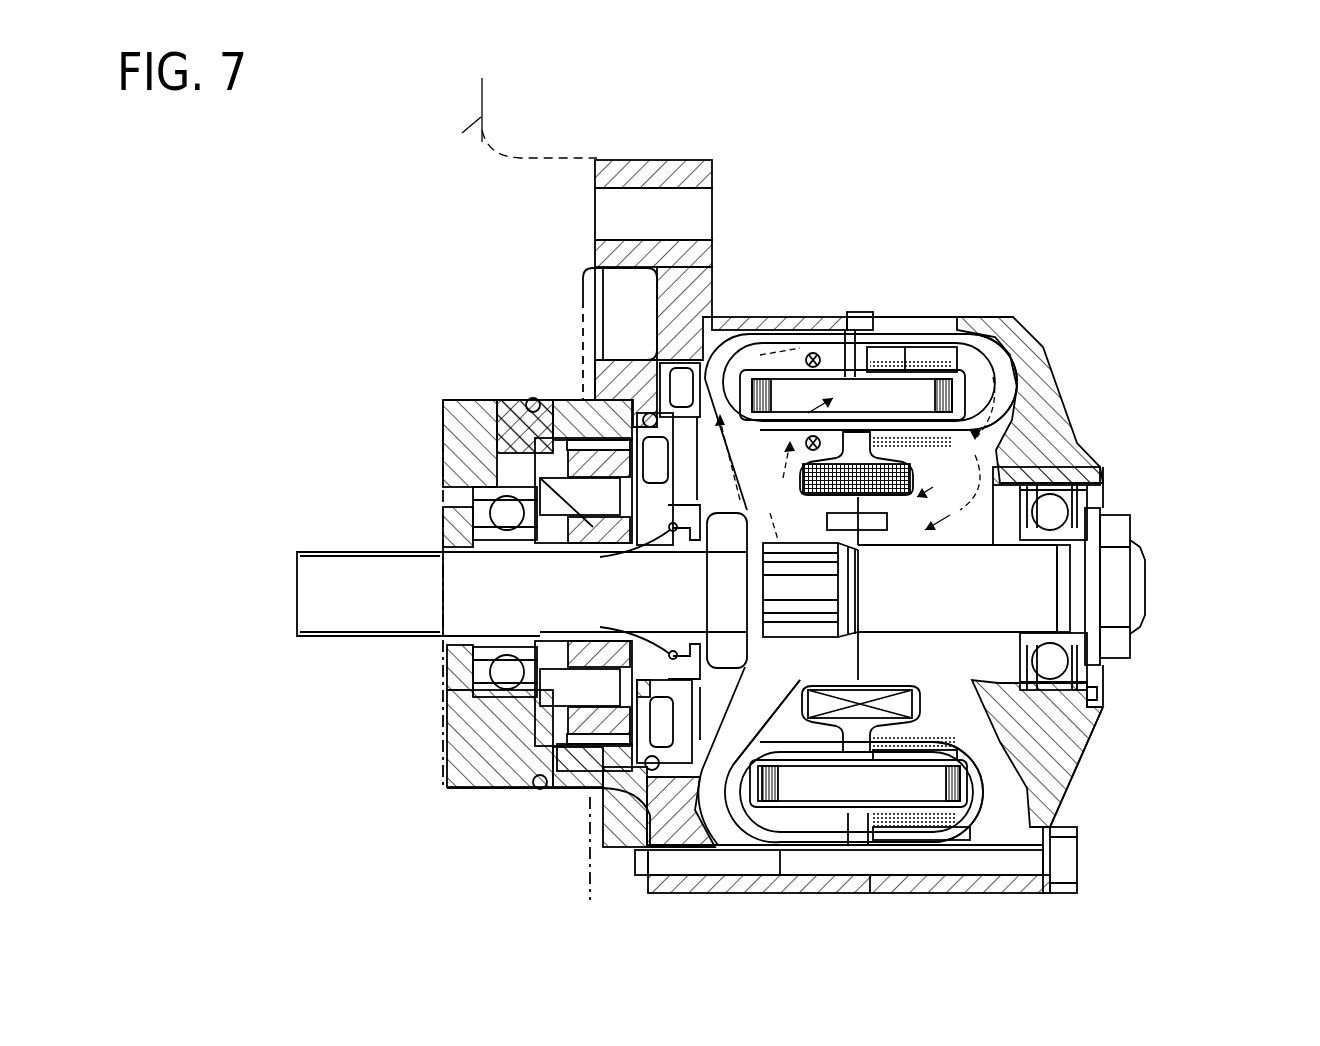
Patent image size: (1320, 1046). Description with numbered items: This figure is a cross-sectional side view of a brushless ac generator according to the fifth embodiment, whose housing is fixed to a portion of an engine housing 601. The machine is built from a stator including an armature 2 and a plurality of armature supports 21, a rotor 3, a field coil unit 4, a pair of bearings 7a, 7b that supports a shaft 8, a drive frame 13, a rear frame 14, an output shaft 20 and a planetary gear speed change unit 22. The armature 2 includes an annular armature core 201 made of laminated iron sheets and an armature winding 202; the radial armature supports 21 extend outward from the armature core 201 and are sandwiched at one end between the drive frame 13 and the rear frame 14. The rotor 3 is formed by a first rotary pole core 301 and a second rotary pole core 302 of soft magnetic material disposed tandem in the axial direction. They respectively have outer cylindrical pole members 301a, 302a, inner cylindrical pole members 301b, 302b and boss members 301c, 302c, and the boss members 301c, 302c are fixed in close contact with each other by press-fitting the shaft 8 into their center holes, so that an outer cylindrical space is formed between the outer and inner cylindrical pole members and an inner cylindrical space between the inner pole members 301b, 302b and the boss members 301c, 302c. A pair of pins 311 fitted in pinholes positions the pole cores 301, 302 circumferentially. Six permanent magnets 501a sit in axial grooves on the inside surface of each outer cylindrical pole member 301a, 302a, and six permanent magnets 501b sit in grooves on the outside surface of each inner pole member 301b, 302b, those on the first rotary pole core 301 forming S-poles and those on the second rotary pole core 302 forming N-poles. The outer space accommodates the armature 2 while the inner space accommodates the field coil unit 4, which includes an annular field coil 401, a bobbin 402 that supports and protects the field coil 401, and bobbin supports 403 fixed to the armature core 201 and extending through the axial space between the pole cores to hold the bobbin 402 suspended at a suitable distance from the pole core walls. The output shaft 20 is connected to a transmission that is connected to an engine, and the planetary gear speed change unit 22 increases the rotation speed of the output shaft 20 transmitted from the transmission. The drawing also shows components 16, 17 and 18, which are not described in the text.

The armature 2 is at (852, 334).
The rotor 3 is at (800, 340).
The field coil unit 4 is at (948, 698).
The bearing 7a is at (490, 512).
The bearing 7b is at (1057, 661).
The shaft 8 is at (1030, 560).
The drive frame 13 is at (716, 254).
The rear frame 14 is at (1074, 773).
The bearing holder 16 is at (1105, 698).
The nut 17 is at (1118, 573).
The bolt 18 is at (1068, 863).
The output shaft 20 is at (342, 573).
The armature supports 21 is at (812, 352).
The planetary gear speed change unit 22 is at (540, 457).
The armature core 201 is at (880, 400).
The armature winding 202 is at (950, 400).
The first rotary pole core 301 is at (1000, 405).
The outer cylindrical pole member 301a is at (990, 822).
The inner cylindrical pole member 301b is at (945, 785).
The boss member 301c is at (1000, 665).
The second rotary pole core 302 is at (733, 345).
The outer cylindrical pole member 302a is at (805, 672).
The inner cylindrical pole member 302b is at (720, 833).
The boss member 302c is at (645, 815).
The pins 311 is at (887, 522).
The field coil 401 is at (915, 478).
The bobbin 402 is at (912, 494).
The bobbin supports 403 is at (857, 750).
The permanent magnets 501a is at (945, 356).
The permanent magnets 501b is at (990, 410).
The engine housing 601 is at (492, 112).